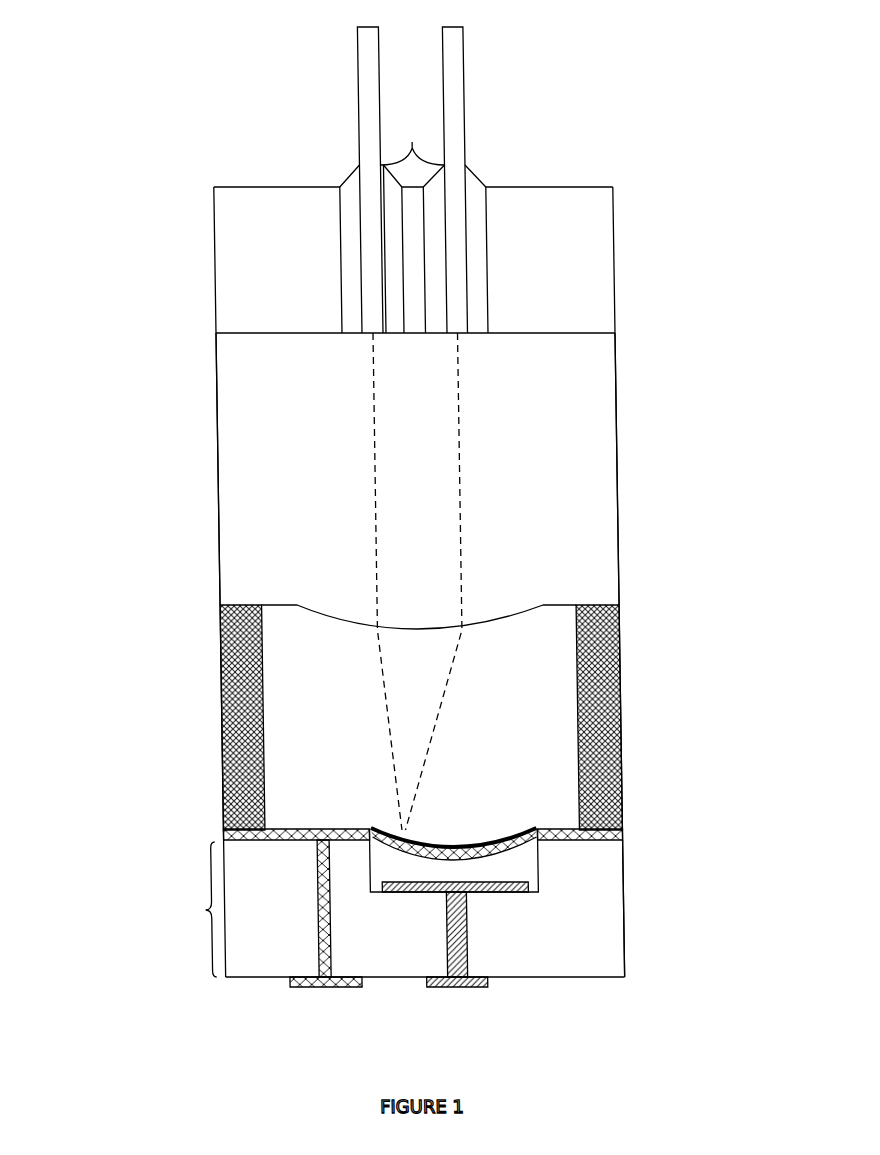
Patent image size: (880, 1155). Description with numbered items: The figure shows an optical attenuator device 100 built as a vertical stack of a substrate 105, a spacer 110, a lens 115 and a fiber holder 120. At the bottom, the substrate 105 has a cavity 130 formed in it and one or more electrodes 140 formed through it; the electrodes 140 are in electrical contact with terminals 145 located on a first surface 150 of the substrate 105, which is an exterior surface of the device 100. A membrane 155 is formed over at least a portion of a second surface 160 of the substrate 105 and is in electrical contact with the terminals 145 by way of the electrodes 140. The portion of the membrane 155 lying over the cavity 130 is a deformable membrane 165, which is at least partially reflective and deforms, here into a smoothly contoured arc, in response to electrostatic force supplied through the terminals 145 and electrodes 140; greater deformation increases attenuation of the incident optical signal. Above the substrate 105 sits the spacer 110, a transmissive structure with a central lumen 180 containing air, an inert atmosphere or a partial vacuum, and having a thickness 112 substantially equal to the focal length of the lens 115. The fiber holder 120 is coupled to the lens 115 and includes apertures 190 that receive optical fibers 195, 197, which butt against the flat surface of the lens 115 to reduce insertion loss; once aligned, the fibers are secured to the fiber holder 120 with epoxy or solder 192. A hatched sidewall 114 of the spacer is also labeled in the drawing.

The optical attenuator device 100 is at (99, 120).
The substrate 105 is at (200, 910).
The spacer 110 is at (221, 750).
The thickness 112 is at (637, 605).
The sidewall 114 is at (233, 653).
The lens 115 is at (230, 379).
The fiber holder 120 is at (230, 229).
The cavity 130 is at (516, 870).
The electrodes 140 is at (313, 908).
The terminals 145 is at (317, 987).
The first surface 150 is at (596, 984).
The membrane 155 is at (536, 838).
The second surface 160 is at (600, 823).
The deformable membrane 165 is at (530, 826).
The lumen 180 is at (287, 659).
The apertures 190 is at (352, 273).
The epoxy or solder 192 is at (413, 226).
The optical fiber 195 is at (366, 130).
The optical fiber 197 is at (472, 100).